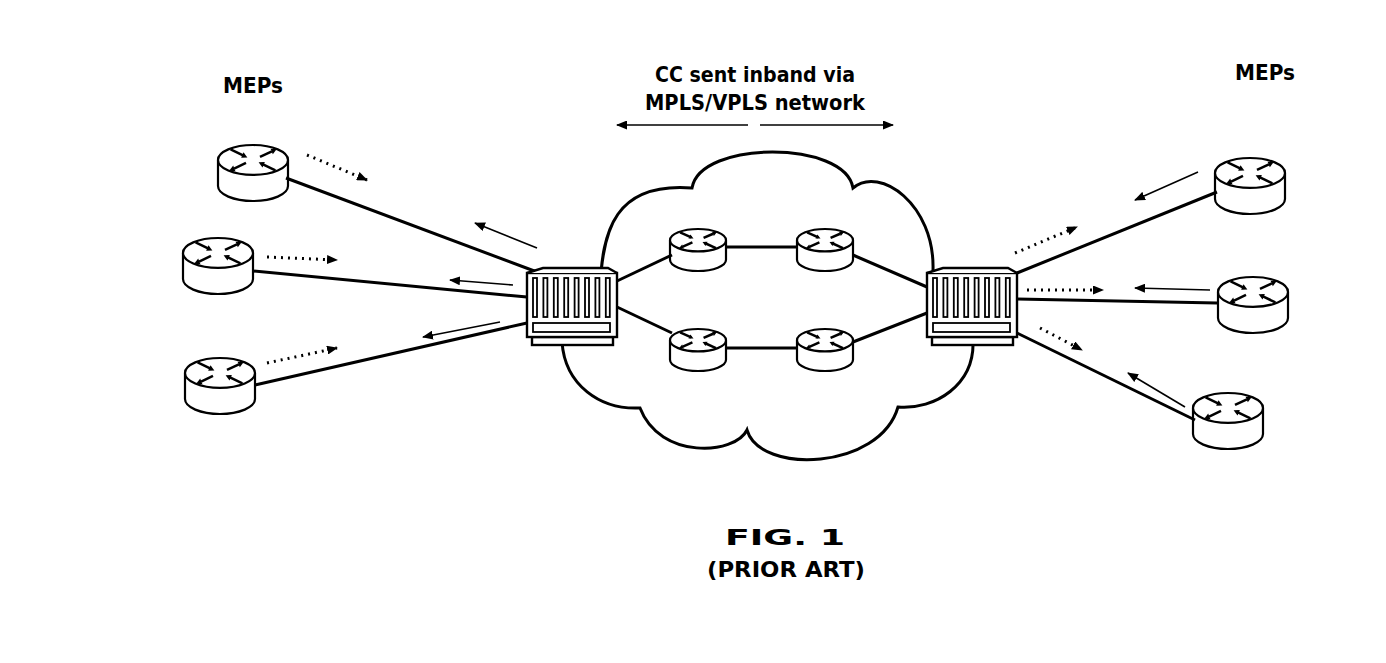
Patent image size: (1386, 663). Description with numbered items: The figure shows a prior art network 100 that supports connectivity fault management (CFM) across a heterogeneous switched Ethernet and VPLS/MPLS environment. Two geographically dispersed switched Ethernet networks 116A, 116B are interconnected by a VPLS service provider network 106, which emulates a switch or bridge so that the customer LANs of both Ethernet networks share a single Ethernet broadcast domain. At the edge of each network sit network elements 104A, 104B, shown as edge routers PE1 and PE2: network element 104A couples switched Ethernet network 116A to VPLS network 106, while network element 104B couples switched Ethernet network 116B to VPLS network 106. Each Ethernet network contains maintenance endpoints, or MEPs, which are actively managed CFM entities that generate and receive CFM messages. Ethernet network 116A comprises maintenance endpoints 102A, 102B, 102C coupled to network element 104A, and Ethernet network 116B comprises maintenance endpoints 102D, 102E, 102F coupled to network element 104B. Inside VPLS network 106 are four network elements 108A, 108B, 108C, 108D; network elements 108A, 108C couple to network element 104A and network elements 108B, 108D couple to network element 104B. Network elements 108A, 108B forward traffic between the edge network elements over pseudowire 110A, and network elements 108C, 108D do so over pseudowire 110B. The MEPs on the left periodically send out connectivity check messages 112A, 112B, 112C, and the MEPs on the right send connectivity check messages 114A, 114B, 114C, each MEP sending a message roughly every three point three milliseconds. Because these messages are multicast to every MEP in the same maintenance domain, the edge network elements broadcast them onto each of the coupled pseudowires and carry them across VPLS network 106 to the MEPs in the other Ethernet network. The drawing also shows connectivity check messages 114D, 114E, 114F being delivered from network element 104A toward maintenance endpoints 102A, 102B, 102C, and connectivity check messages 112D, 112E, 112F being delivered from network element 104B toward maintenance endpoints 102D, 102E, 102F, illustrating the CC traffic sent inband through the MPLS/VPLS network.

The network 100 is at (555, 137).
The maintenance endpoint 102A is at (202, 188).
The maintenance endpoint 102B is at (178, 265).
The maintenance endpoint 102C is at (182, 386).
The maintenance endpoint 102D is at (1337, 165).
The maintenance endpoint 102E is at (1350, 300).
The maintenance endpoint 102F is at (1320, 448).
The network element 104A is at (550, 408).
The network element 104B is at (1030, 408).
The VPLS service provider network 106 is at (803, 445).
The network element 108A is at (722, 300).
The network element 108B is at (855, 300).
The network element 108C is at (722, 391).
The network element 108D is at (855, 389).
The pseudowire 110A is at (780, 228).
The pseudowire 110B is at (780, 331).
The connectivity check message 112A is at (347, 123).
The connectivity check message 112B is at (315, 223).
The connectivity check message 112C is at (300, 321).
The connectivity check message 112D is at (1030, 203).
The connectivity check message 112E is at (1135, 271).
The connectivity check message 112F is at (1128, 333).
The connectivity check message 114A is at (1216, 141).
The connectivity check message 114B is at (1226, 239).
The connectivity check message 114C is at (1242, 375).
The connectivity check message 114D is at (492, 203).
The connectivity check message 114E is at (458, 273).
The connectivity check message 114F is at (420, 321).
The switched Ethernet network 116A is at (460, 471).
The switched Ethernet network 116B is at (1093, 488).